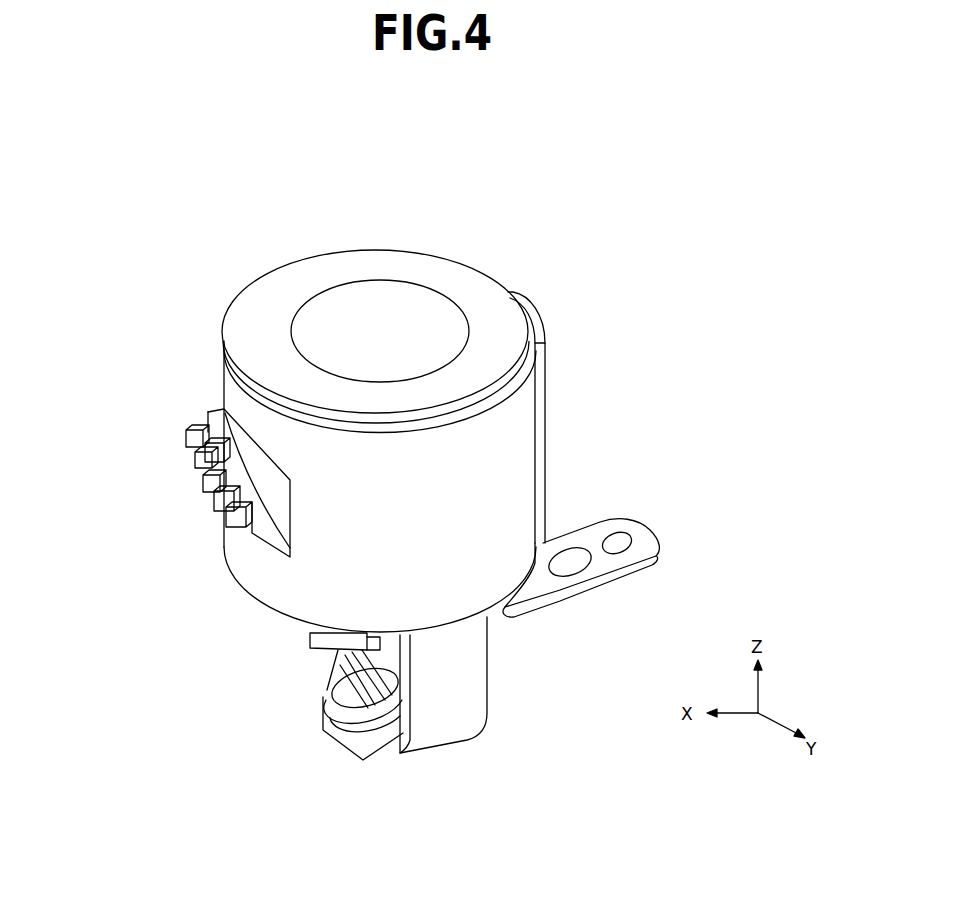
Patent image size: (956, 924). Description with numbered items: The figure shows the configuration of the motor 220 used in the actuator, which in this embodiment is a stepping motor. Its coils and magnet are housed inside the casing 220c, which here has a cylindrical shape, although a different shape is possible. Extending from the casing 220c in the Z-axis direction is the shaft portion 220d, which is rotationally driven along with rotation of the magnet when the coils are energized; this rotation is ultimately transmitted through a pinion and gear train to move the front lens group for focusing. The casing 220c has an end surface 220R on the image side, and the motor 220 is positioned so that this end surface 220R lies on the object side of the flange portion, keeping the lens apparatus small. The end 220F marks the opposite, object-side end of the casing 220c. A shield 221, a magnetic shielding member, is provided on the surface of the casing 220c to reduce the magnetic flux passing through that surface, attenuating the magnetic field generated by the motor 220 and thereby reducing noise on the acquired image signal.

The motor 220 is at (403, 166).
The front end (front side) of motor 220F is at (478, 290).
The casing 220c is at (136, 295).
The shaft portion 220d is at (136, 603).
The end surface on the image side of the casing 220R is at (283, 620).
The shield 221 is at (500, 480).